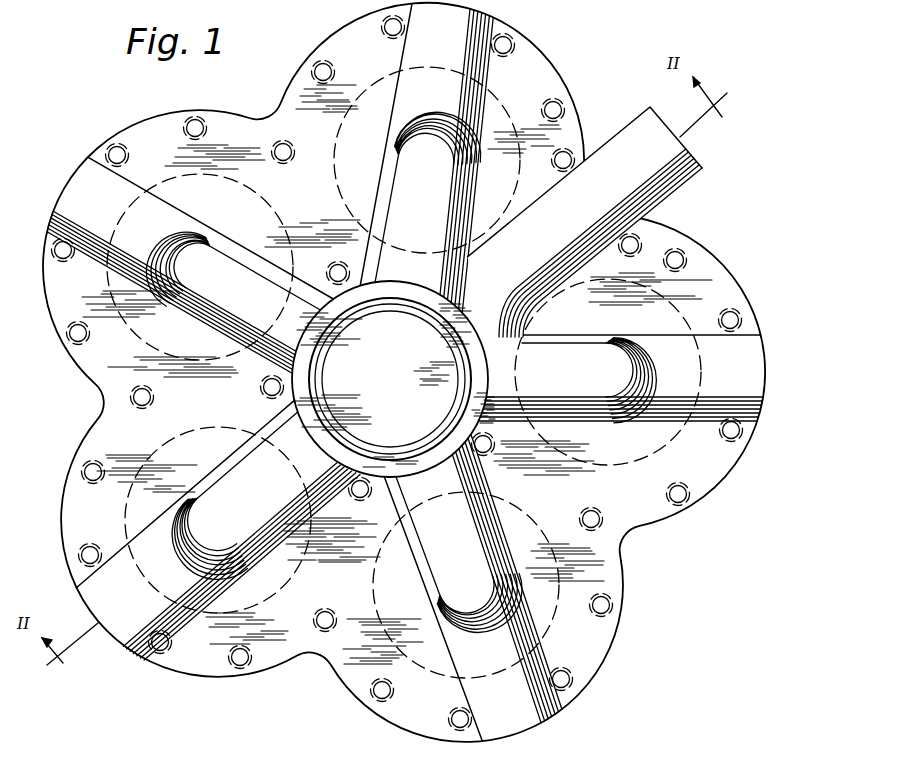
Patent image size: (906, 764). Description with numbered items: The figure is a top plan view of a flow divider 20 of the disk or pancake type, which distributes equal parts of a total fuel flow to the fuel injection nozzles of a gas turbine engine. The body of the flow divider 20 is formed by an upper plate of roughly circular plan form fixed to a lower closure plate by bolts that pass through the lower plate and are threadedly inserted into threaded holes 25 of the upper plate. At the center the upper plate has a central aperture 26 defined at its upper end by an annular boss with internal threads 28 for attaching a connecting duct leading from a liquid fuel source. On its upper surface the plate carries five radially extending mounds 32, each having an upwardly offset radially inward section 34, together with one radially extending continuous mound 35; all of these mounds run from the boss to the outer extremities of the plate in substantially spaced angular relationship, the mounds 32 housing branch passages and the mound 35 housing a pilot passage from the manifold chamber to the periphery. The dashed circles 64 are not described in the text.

The flow divider assembly 20 is at (513, 27).
The threaded holes 25 is at (324, 64).
The central aperture 26 is at (352, 338).
The internal threads 28 is at (334, 763).
The radially extending mounds 32 is at (122, 185).
The upwardly offset radially inward section 34 is at (233, 251).
The radially extending continuous mound 35 is at (608, 138).
The circular recesses 64 is at (333, 165).